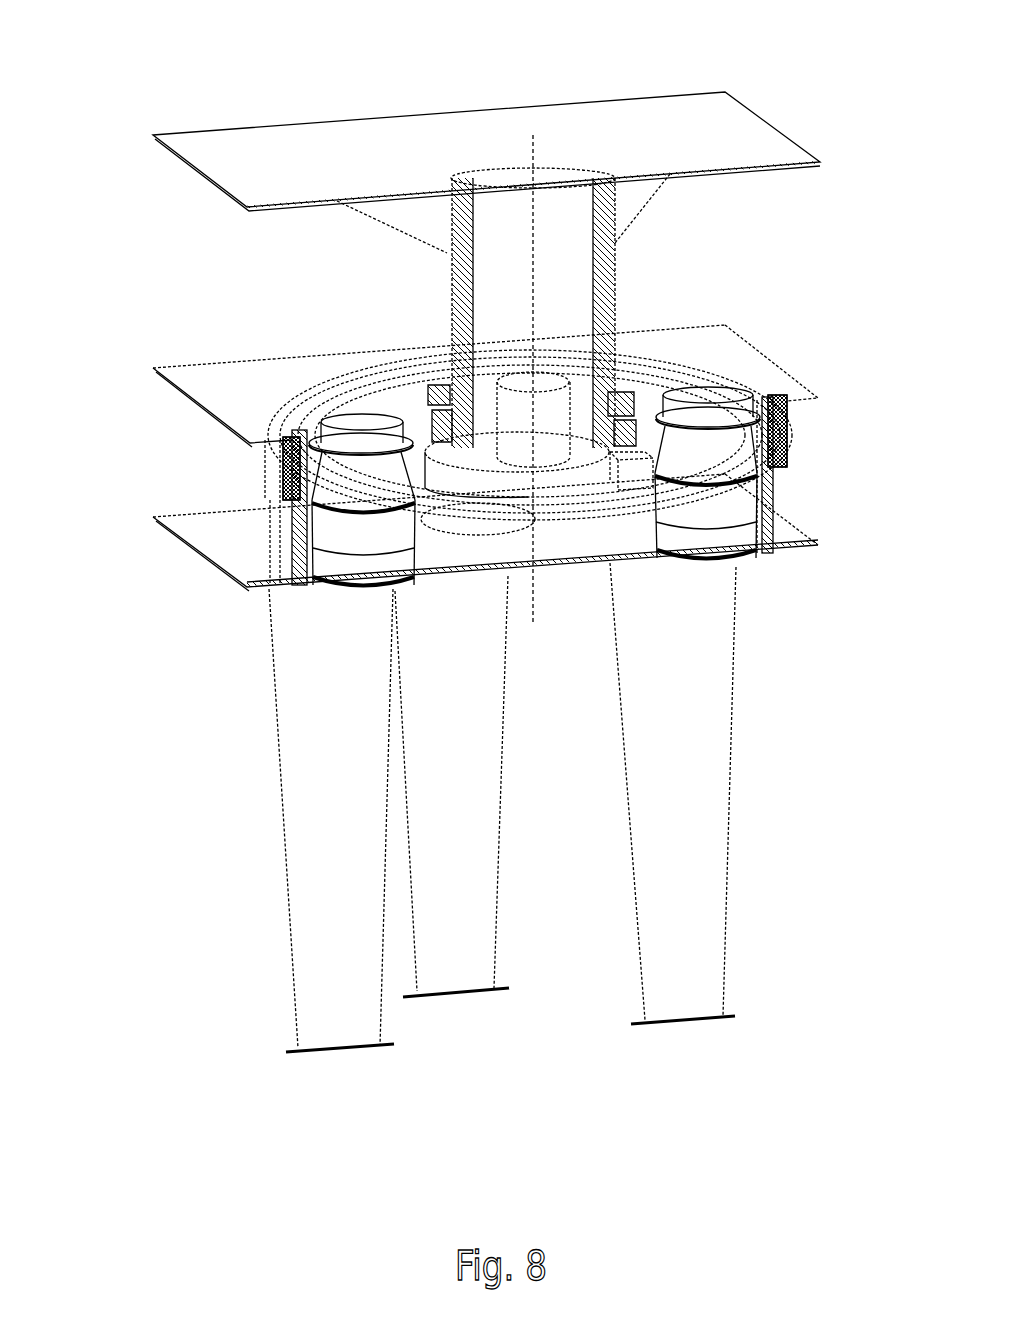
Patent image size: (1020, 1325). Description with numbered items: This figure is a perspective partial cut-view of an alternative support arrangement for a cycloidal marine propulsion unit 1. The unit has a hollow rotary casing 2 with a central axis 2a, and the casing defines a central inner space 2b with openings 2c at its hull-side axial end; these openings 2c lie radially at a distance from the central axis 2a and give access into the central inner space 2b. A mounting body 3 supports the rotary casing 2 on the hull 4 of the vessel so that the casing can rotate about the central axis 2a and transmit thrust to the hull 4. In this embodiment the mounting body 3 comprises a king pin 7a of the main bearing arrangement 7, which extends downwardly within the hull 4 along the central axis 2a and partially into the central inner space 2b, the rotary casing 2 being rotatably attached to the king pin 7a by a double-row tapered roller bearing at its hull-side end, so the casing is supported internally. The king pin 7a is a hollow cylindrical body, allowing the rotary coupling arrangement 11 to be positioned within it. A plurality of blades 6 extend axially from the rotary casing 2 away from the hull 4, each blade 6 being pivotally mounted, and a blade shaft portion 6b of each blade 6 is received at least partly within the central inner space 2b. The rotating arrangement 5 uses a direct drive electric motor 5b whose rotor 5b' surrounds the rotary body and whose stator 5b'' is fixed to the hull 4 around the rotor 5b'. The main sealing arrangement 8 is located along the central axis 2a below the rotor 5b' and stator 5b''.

The cycloidal marine propulsion unit 1 is at (853, 940).
The rotary casing 2 is at (777, 493).
The central axis 2a is at (537, 198).
The central inner space 2b is at (571, 530).
The opening 2c is at (356, 399).
The mounting body 3 is at (417, 212).
The hull 4 is at (198, 408).
The rotating arrangement 5 is at (266, 424).
The direct drive electric motor 5b is at (535, 447).
The rotor 5b' is at (533, 385).
The stator 5b'' is at (808, 374).
The blade 6 is at (347, 838).
The blade shaft portion 6b is at (378, 499).
The main bearing arrangement 7 is at (433, 347).
The king pin 7a is at (613, 243).
The main sealing arrangement 8 is at (769, 540).
The rotary coupling arrangement 11 is at (510, 385).